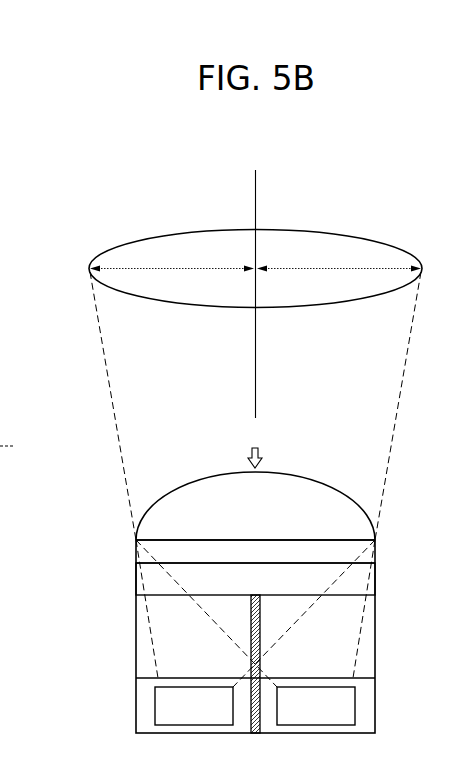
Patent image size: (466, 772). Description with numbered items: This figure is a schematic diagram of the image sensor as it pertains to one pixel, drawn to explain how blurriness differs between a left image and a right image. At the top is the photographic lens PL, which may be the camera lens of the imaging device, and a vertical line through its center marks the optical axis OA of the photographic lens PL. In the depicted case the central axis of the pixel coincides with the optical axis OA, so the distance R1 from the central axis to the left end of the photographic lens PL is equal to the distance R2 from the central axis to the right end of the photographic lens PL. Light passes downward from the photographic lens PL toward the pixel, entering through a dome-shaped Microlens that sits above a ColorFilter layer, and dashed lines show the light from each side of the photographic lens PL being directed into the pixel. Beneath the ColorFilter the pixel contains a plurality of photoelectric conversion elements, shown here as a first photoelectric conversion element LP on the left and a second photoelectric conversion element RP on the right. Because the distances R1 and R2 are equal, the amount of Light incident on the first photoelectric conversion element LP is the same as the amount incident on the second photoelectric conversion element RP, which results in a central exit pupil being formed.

The photographic lens PL is at (133, 242).
The optical axis OA is at (257, 185).
The distance from the central axis to one side of the photographic lens R1 is at (172, 258).
The distance from the central axis to the other side of the photographic lens R2 is at (339, 258).
The incident light Light is at (255, 443).
The microlens Microlens is at (255, 506).
The color filter ColorFilter is at (255, 579).
The first photoelectric conversion element LP is at (194, 706).
The second photoelectric conversion element RP is at (316, 706).